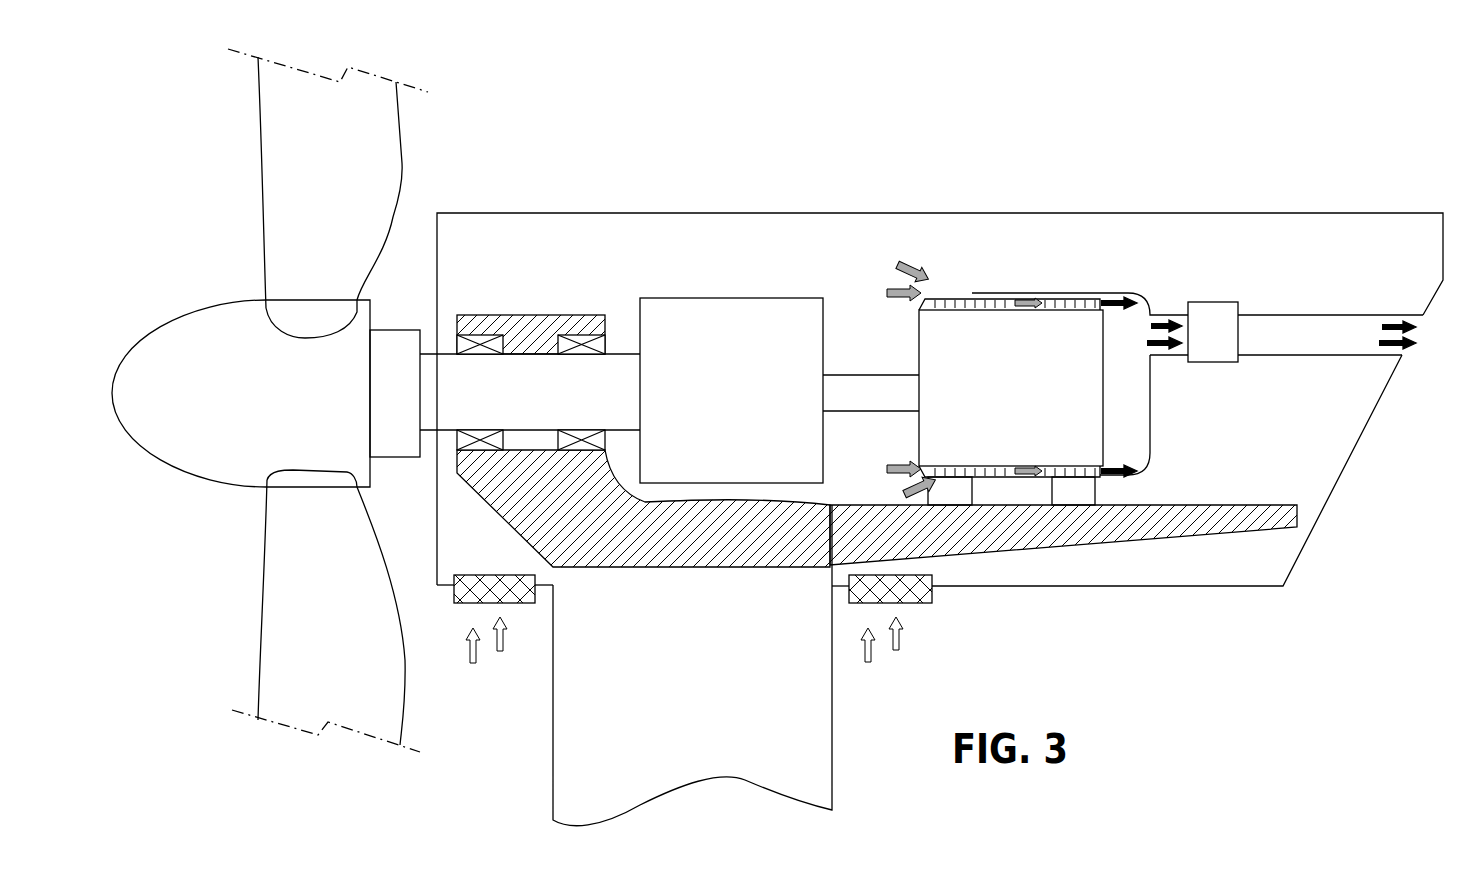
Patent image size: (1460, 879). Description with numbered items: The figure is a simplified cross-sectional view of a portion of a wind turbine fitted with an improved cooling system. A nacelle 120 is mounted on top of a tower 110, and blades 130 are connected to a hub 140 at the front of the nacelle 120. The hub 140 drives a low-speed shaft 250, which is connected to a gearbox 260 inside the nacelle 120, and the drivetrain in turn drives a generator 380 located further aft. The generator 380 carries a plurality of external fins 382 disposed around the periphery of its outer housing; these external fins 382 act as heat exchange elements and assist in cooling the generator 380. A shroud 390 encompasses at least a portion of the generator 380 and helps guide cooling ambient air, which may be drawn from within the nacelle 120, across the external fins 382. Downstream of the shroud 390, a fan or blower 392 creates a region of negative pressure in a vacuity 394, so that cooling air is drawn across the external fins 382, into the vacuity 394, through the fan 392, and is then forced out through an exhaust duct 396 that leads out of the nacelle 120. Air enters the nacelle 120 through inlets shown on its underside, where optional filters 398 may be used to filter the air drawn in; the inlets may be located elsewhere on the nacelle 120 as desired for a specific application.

The tower 110 is at (671, 697).
The nacelle 120 is at (580, 213).
The blades 130 is at (340, 172).
The hub 140 is at (257, 403).
The low-speed shaft 250 is at (501, 403).
The gearbox 260 is at (757, 403).
The generator 380 is at (992, 404).
The external fins 382 is at (940, 299).
The shroud 390 is at (1135, 293).
The fan or blower 392 is at (1213, 302).
The vacuity 394 is at (1133, 413).
The exhaust duct 396 is at (1332, 315).
The filters 398 is at (466, 603).